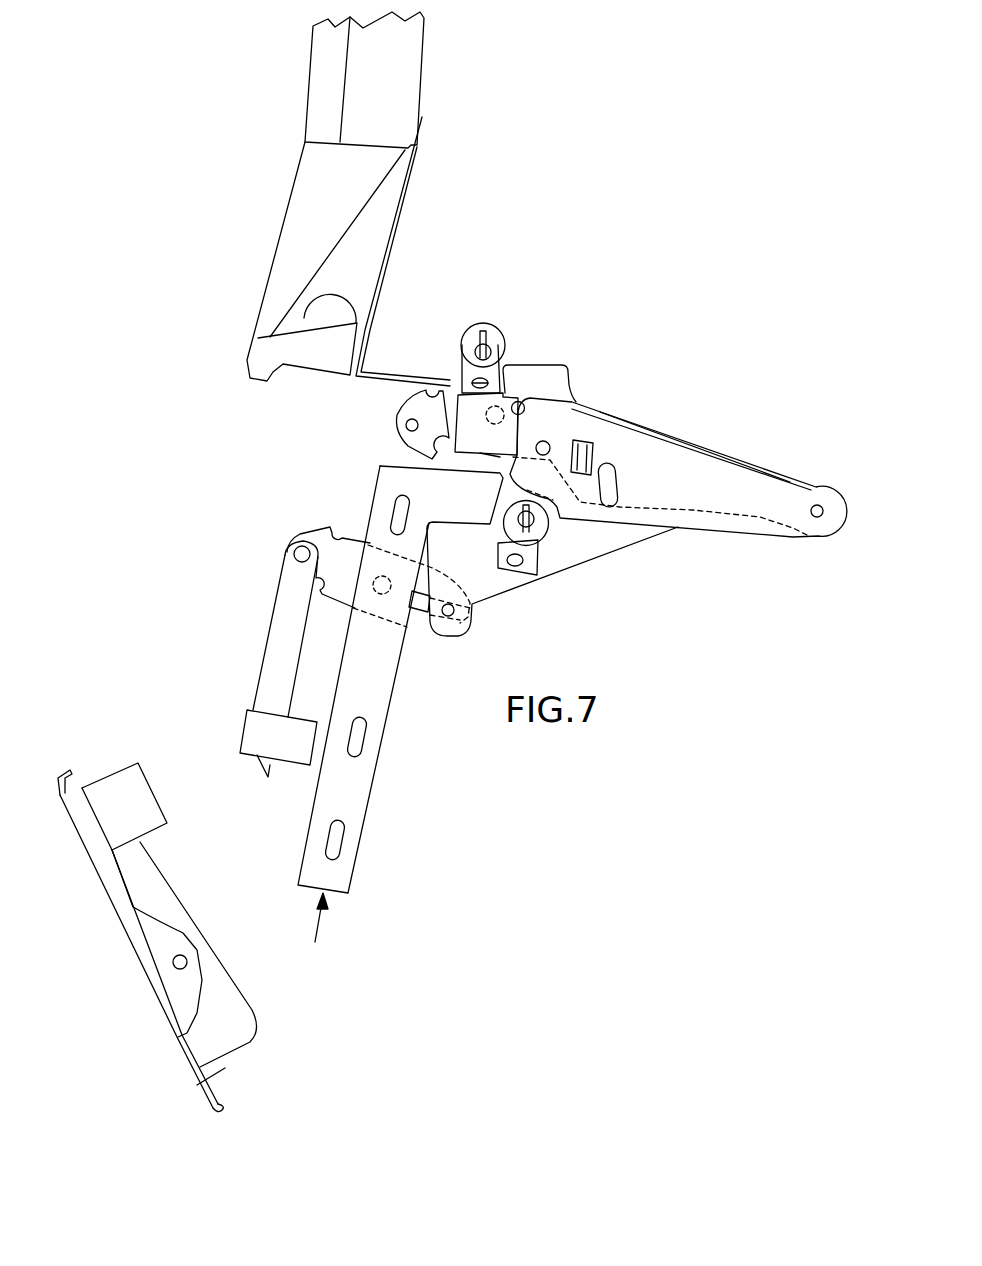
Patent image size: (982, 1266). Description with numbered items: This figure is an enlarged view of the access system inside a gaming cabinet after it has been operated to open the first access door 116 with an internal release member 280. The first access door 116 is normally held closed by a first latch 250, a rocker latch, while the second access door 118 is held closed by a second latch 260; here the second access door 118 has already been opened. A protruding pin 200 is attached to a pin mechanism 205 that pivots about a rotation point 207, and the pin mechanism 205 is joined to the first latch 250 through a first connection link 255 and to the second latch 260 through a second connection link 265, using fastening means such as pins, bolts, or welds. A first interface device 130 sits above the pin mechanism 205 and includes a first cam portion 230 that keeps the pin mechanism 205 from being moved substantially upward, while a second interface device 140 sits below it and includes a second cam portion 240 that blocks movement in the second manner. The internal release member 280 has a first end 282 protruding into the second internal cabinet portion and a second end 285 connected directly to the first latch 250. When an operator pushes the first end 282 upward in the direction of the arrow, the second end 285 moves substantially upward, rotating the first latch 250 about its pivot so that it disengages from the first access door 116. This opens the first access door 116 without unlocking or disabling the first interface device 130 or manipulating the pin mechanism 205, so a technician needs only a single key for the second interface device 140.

The first access door 116 is at (276, 245).
The second access door 118 is at (143, 973).
The first interface device 130 is at (484, 322).
The second interface device 140 is at (548, 528).
The protruding pin 200 is at (550, 443).
The pin mechanism 205 is at (703, 460).
The rotation point 207 is at (817, 504).
The first cam portion 230 is at (455, 368).
The second cam portion 240 is at (510, 574).
The first latch 250 is at (396, 426).
The first connection link 255 is at (480, 455).
The second latch 260 is at (268, 645).
The second connection link 265 is at (580, 565).
The internal release member 280 is at (370, 800).
The first end 282 is at (340, 895).
The second end 285 is at (552, 365).